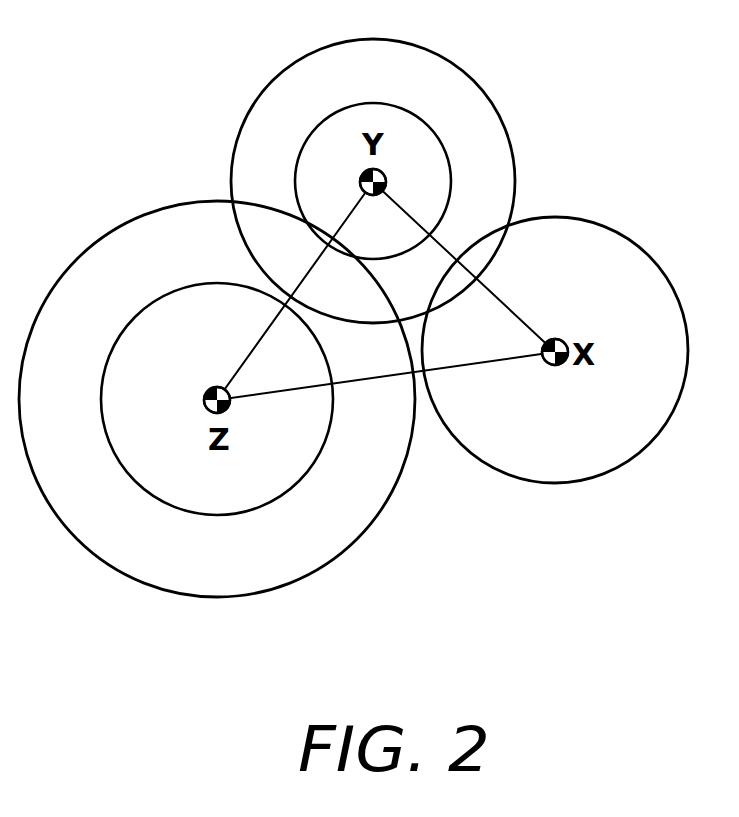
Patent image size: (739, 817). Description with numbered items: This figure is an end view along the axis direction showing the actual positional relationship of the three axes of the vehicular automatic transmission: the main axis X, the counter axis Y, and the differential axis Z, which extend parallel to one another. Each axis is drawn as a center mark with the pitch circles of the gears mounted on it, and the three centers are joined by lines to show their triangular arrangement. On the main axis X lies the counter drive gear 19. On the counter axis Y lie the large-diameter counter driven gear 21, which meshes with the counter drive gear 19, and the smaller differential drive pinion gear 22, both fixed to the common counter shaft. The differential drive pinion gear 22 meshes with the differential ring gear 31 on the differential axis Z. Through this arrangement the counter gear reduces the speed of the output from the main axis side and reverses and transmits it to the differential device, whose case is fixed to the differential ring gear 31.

The counter drive gear 19 is at (655, 262).
The counter driven gear 21 is at (507, 122).
The differential drive pinion gear 22 is at (306, 143).
The differential ring gear 31 is at (368, 527).